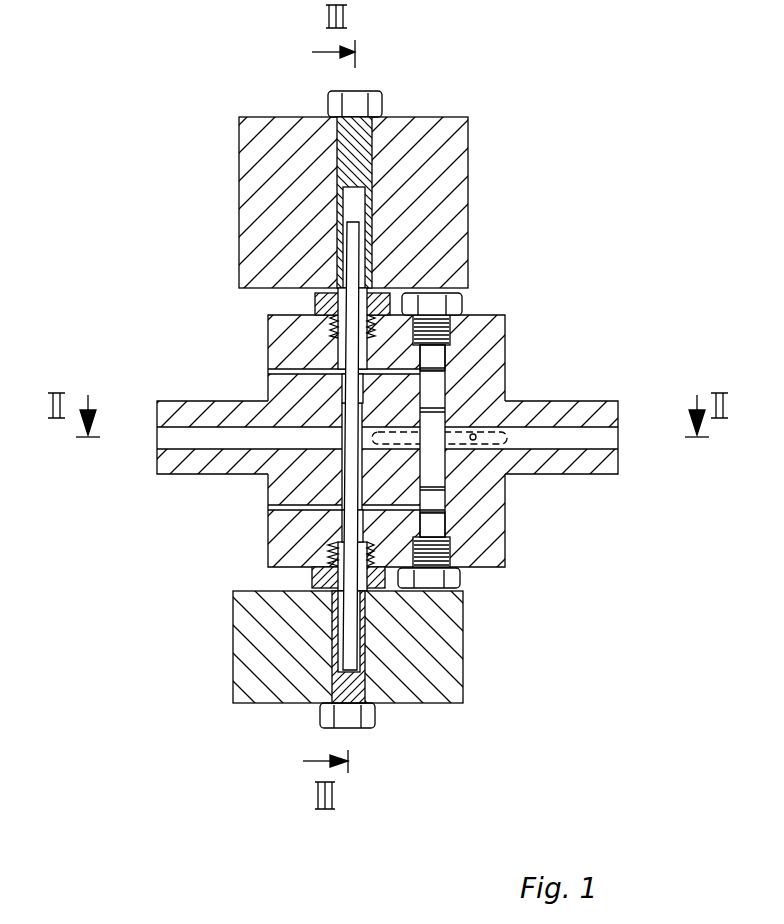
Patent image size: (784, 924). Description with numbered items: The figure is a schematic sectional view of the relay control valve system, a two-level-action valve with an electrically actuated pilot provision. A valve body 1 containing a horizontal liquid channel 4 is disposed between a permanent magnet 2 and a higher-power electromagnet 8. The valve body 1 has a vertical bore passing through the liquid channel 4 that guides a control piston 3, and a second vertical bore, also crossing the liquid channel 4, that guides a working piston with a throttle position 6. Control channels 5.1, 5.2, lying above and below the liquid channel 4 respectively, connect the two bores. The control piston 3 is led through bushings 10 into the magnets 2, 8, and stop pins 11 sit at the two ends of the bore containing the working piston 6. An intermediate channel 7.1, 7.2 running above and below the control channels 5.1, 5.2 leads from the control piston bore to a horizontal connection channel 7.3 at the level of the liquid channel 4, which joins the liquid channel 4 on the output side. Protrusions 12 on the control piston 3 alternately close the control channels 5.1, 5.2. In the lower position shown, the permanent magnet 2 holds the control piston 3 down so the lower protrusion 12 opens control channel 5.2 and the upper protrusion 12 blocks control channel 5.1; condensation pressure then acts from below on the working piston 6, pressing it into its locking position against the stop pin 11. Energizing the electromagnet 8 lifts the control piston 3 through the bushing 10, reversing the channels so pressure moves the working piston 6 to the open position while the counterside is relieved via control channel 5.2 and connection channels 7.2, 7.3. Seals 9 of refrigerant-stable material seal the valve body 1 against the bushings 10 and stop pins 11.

The valve body 1 is at (480, 397).
The permanent magnet 2 is at (423, 677).
The control piston 3 is at (348, 640).
The liquid channel 4 is at (555, 438).
The control channel 5.1 is at (423, 358).
The control channel 5.2 is at (440, 528).
The working piston 6 is at (432, 390).
The intermediate channel 7.1 is at (300, 330).
The intermediate channel 7.2 is at (305, 550).
The connection channel 7.3 is at (467, 438).
The electromagnet 8 is at (435, 160).
The seals 9 is at (327, 322).
The bushings 10 is at (318, 297).
The stop pins 11 is at (465, 288).
The protrusions 12 is at (342, 390).